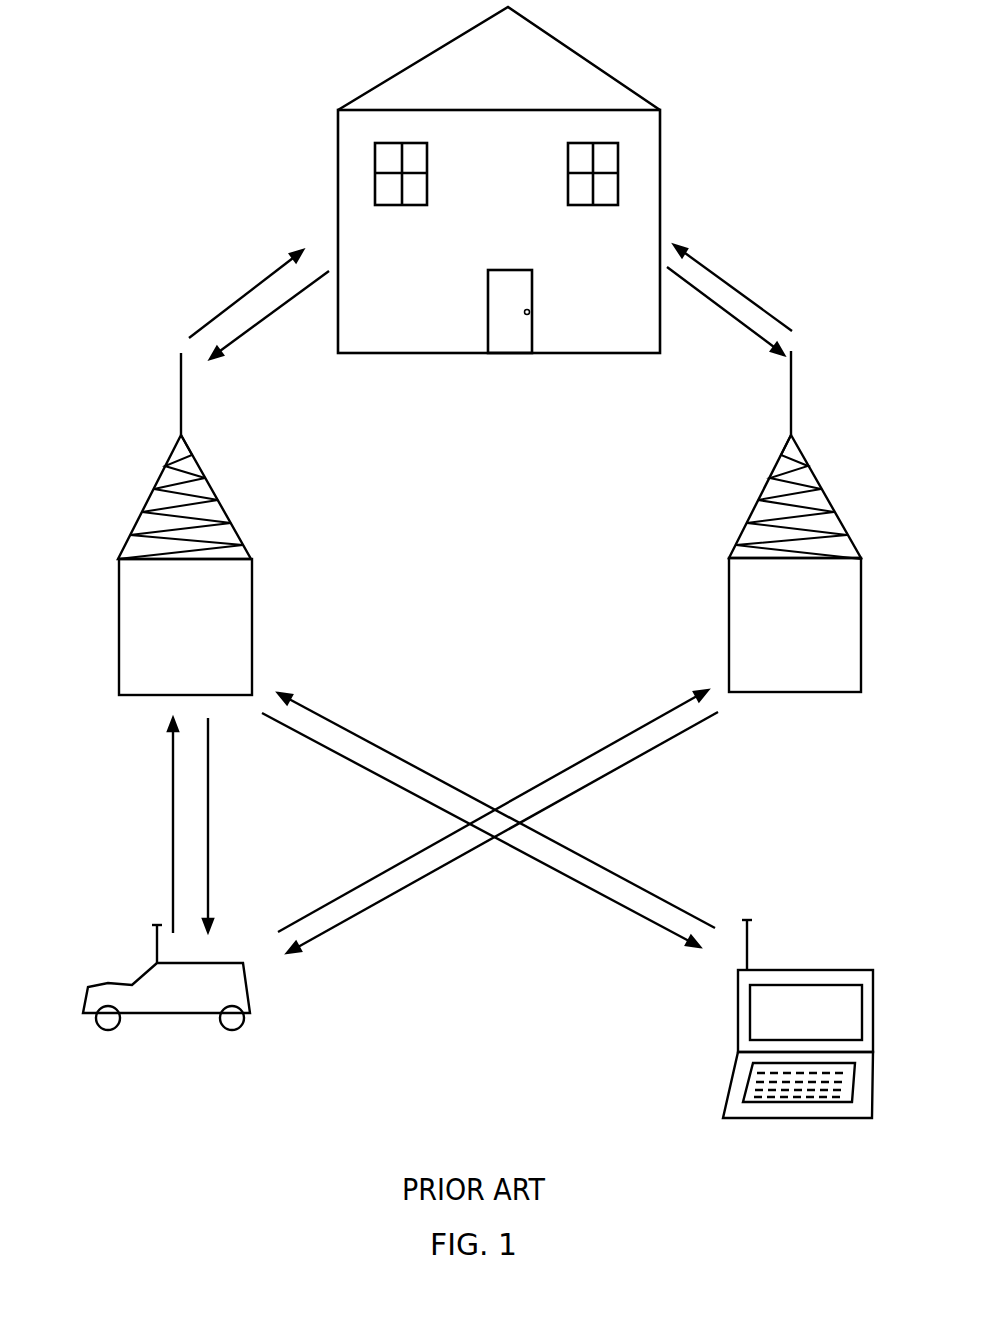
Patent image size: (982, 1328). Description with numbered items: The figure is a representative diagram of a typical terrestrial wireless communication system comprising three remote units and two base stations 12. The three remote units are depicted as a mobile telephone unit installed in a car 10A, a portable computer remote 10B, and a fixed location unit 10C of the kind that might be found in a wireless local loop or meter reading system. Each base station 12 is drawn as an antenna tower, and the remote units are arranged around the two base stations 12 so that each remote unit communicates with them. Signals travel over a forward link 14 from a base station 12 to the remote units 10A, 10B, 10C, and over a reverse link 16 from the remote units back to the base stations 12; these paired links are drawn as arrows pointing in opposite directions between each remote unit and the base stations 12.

The mobile telephone unit installed in a car 10A is at (110, 983).
The portable computer remote 10B is at (847, 970).
The fixed location unit 10C is at (580, 53).
The base station 12 is at (152, 491).
The forward link 14 is at (262, 279).
The reverse link 16 is at (280, 308).